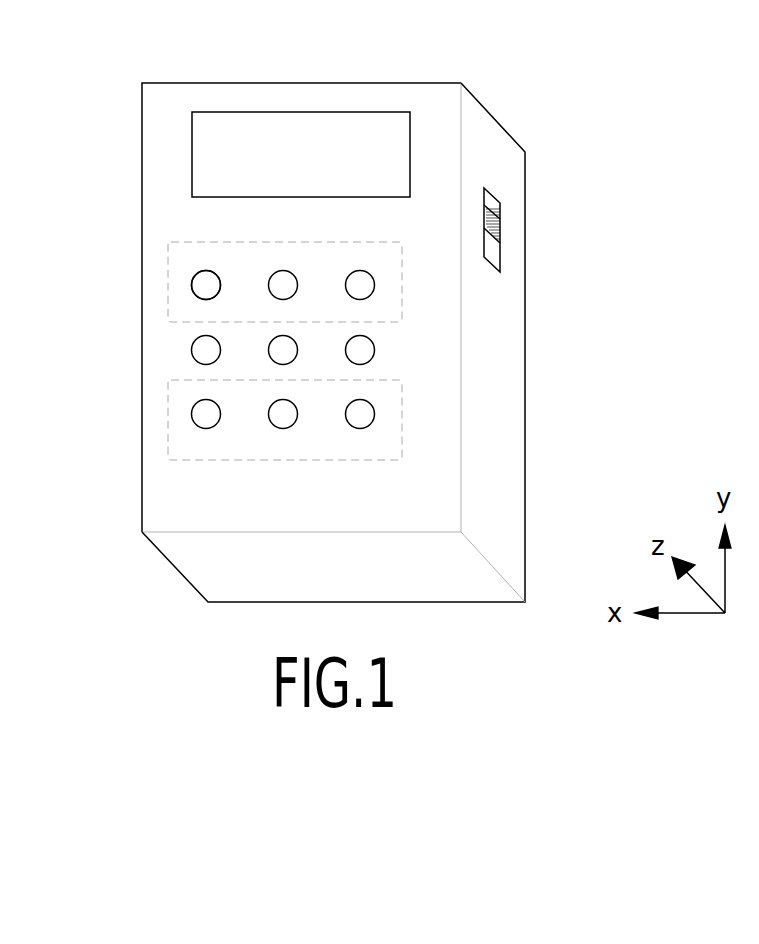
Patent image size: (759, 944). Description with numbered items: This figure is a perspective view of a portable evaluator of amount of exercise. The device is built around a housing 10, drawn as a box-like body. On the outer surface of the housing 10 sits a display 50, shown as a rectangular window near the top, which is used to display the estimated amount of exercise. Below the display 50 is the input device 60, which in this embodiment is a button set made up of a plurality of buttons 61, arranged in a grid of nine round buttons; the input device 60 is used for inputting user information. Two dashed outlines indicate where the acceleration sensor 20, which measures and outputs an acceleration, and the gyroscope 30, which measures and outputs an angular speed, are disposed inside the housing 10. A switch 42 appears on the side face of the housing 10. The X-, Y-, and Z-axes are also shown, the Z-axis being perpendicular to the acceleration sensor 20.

The housing 10 is at (347, 93).
The display 50 is at (257, 127).
The switch 42 is at (490, 209).
The acceleration sensor 20 is at (178, 250).
The gyroscope 30 is at (177, 452).
The input device 60 is at (188, 356).
The buttons 61 is at (203, 283).